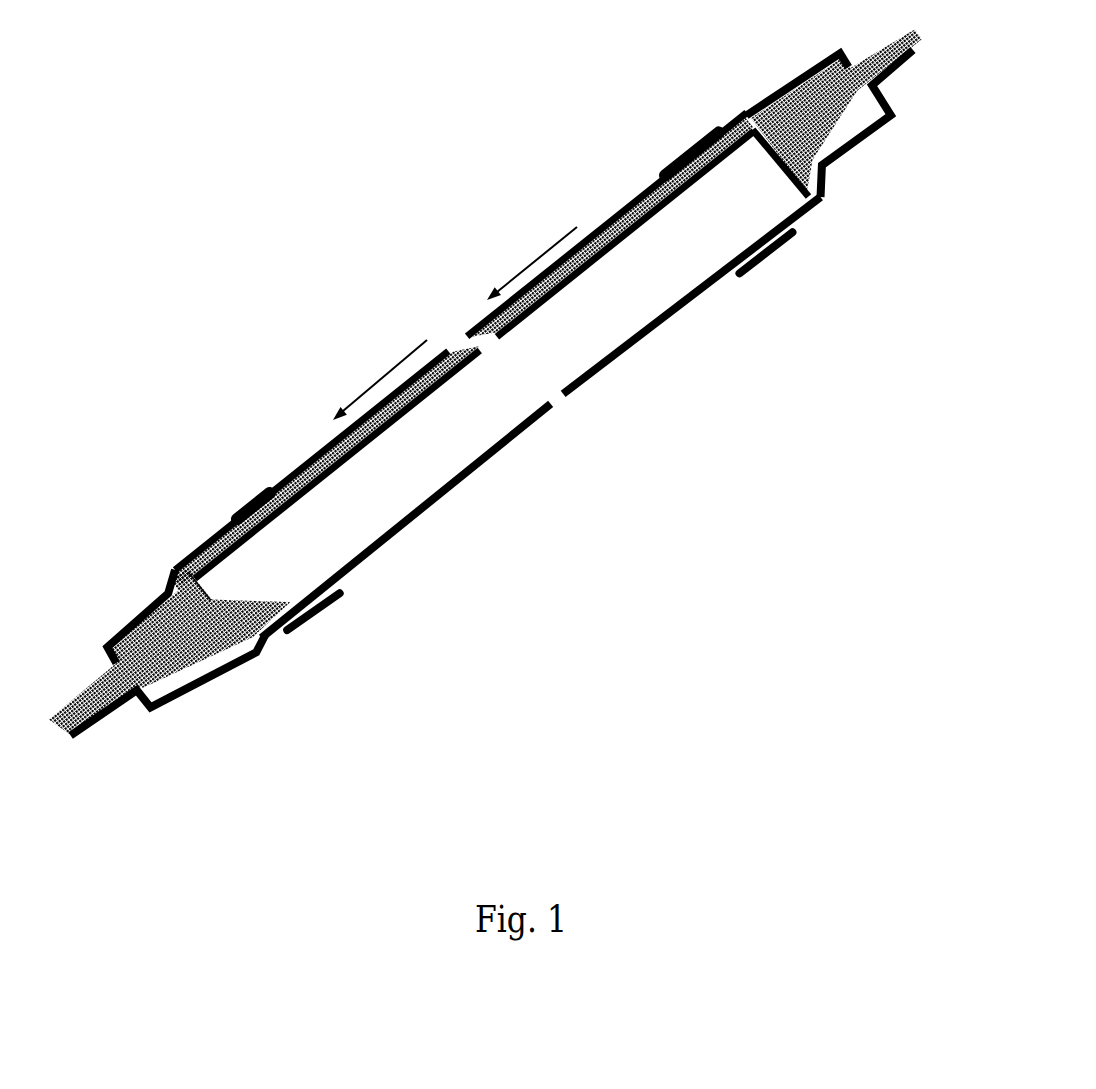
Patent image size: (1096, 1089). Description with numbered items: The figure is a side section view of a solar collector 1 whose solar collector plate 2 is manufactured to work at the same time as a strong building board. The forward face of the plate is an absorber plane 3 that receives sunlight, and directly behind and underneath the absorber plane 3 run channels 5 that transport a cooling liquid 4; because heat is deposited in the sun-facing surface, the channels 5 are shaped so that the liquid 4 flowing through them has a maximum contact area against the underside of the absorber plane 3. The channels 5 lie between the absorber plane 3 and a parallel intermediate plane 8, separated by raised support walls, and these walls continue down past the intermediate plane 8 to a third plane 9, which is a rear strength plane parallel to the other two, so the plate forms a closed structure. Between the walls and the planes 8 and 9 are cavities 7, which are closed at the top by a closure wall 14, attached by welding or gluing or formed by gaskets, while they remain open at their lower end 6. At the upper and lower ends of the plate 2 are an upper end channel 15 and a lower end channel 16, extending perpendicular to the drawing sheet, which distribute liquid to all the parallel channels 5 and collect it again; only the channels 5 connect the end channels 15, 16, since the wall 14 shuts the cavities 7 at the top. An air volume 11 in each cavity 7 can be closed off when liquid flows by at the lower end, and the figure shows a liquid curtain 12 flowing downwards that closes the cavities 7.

The solar collector 1 is at (318, 200).
The solar collector plate 2 is at (778, 174).
The absorber plane 3 is at (592, 236).
The cooling liquid 4 is at (832, 56).
The channels 5 is at (300, 470).
The lower end 6 is at (250, 587).
The cavities 7 is at (420, 457).
The intermediate plane 8 is at (297, 507).
The third plane 9 is at (641, 334).
The air volume 11 is at (378, 494).
The liquid curtain 12 is at (173, 583).
The closure wall 14 is at (680, 163).
The upper end channel 15 is at (828, 174).
The lower end channel 16 is at (213, 668).